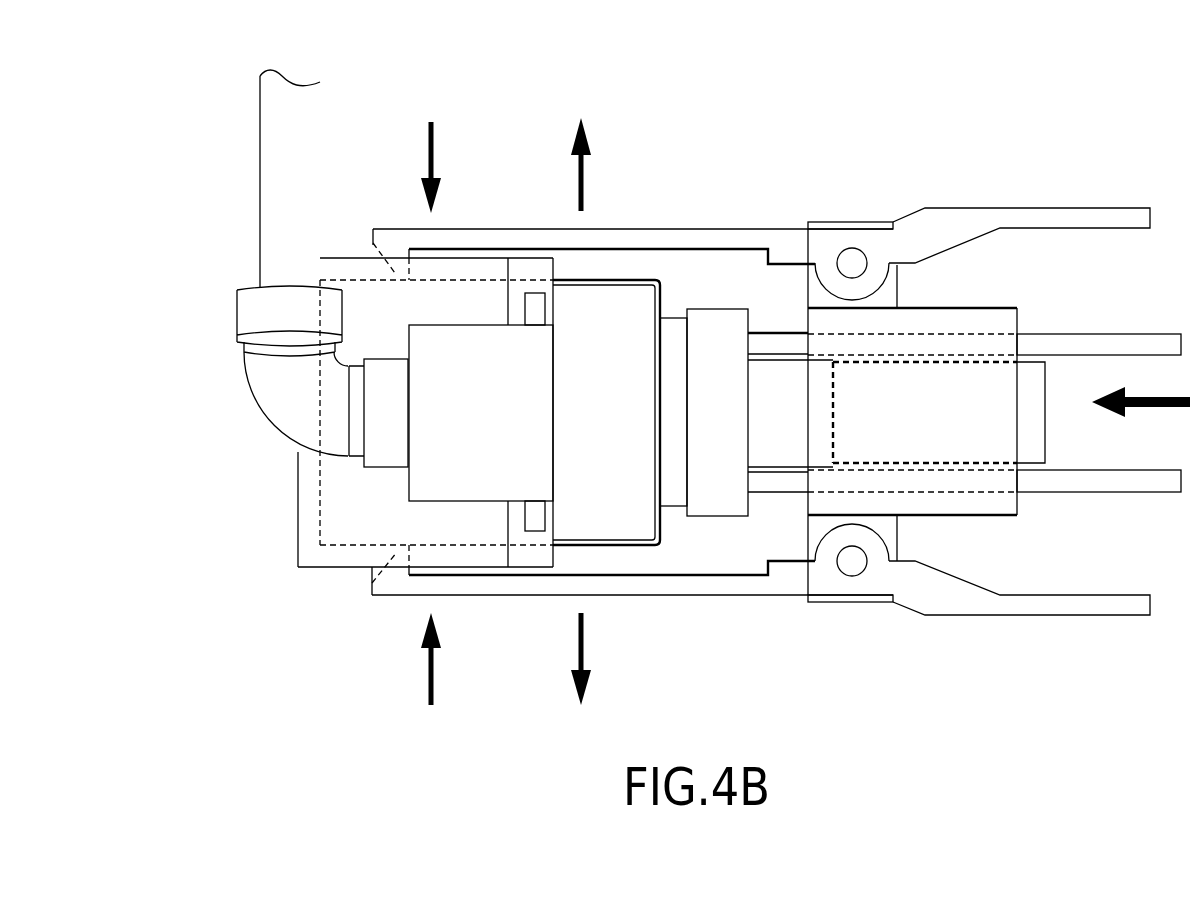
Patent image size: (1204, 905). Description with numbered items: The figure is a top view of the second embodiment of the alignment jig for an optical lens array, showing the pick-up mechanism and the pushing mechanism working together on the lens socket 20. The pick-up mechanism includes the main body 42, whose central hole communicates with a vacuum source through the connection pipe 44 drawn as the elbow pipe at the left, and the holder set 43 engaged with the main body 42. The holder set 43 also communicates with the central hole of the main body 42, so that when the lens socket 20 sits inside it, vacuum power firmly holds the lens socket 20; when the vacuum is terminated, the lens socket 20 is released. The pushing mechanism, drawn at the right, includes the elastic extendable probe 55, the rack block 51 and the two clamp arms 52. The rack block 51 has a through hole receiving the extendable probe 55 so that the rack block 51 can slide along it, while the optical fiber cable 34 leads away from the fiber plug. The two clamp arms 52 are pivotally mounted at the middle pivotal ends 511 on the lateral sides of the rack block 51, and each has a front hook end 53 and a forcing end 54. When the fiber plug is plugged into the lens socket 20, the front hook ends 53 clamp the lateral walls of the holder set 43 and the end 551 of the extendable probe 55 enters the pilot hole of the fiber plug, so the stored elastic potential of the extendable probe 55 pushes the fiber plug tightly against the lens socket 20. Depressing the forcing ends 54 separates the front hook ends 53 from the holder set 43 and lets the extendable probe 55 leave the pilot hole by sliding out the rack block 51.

The lens socket 20 is at (591, 297).
The optical fiber cable 34 is at (1040, 443).
The main body 42 is at (422, 485).
The holder set 43 is at (307, 477).
The connection pipe 44 is at (263, 372).
The rack block 51 is at (950, 318).
The middle pivotal end 511 is at (857, 567).
The clamp arm 52 is at (527, 592).
The front hook end 53 is at (388, 572).
The forcing end 54 is at (1075, 610).
The elastic extendable probe 55 is at (1120, 342).
The end of extendable probe 551 is at (755, 342).